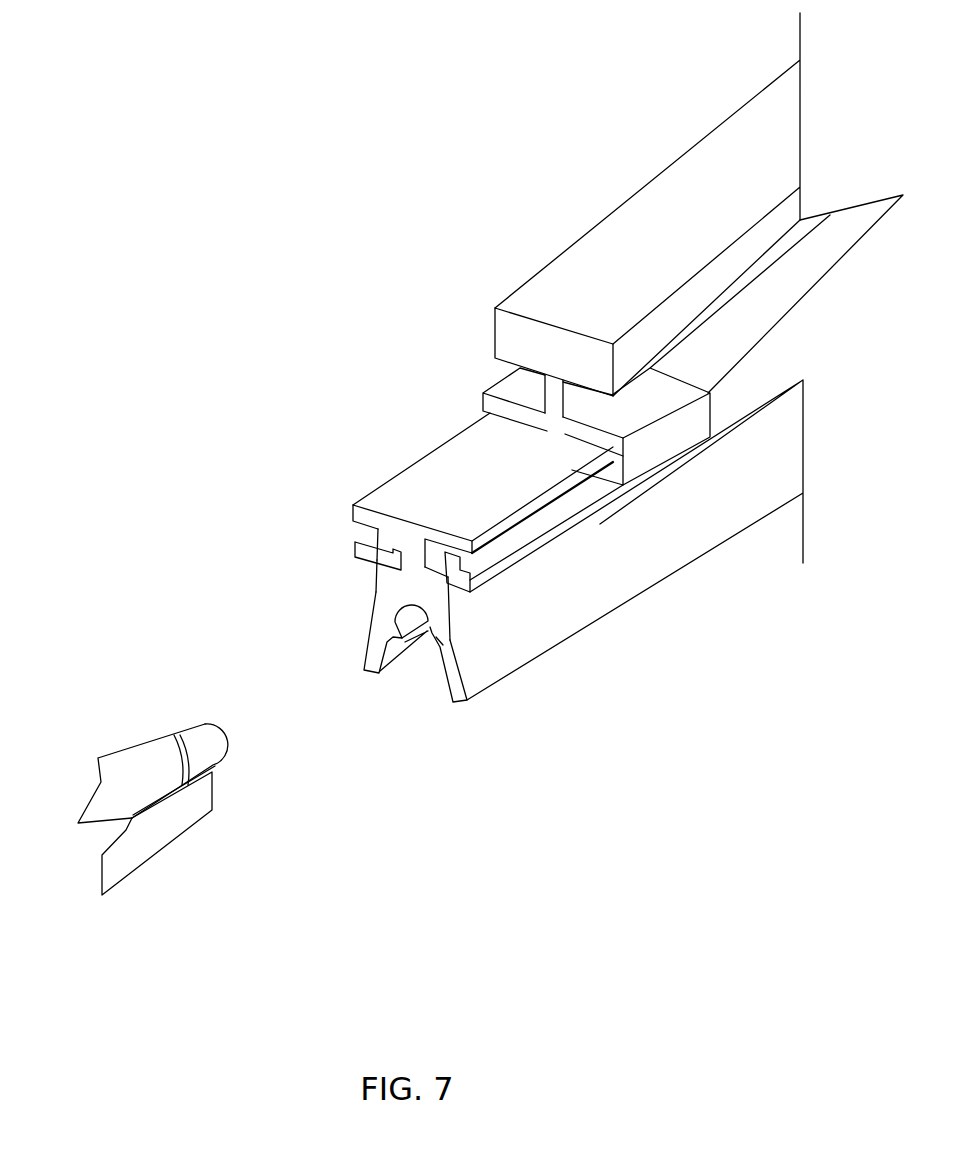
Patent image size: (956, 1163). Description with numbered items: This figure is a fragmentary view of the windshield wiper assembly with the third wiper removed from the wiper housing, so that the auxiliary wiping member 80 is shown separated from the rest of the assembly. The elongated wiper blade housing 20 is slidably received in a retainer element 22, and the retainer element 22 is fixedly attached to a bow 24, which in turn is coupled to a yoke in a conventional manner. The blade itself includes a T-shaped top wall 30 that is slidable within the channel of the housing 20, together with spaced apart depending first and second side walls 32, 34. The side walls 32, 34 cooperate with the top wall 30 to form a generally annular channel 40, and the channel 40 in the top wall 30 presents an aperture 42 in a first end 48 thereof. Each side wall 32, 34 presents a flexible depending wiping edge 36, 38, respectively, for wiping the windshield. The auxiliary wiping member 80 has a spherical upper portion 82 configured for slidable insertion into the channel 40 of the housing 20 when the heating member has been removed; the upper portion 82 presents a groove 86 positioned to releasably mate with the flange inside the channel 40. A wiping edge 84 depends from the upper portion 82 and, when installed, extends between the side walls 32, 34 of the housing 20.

The wiper blade housing 20 is at (410, 485).
The retainer element 22 is at (653, 445).
The bow 24 is at (660, 201).
The T-shaped top wall 30 is at (407, 547).
The first side wall 32 is at (603, 577).
The second side wall 34 is at (402, 670).
The wiping edge 36 is at (457, 700).
The wiping edge 38 is at (365, 667).
The channel 40 is at (402, 617).
The aperture 42 is at (422, 613).
The first end 48 is at (440, 642).
The auxiliary wiping member 80 is at (121, 770).
The spherical upper portion 82 is at (127, 777).
The wiping edge 84 is at (140, 837).
The groove 86 is at (166, 743).